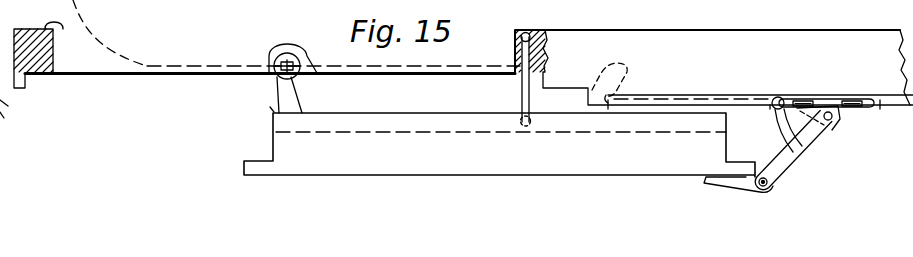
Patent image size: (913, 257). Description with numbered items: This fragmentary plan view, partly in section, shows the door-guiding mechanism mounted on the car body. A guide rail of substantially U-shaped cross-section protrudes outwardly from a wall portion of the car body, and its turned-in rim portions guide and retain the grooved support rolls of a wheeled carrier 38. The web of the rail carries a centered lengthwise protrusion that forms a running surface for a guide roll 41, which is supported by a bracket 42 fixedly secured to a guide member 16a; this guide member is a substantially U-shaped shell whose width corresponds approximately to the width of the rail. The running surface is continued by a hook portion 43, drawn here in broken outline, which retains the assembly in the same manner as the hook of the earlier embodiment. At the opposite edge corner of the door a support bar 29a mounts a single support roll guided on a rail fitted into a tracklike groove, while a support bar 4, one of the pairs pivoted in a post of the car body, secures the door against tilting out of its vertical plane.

The support bar 4 is at (522, 100).
The hook portion 43 is at (609, 70).
The support bar 29a is at (291, 98).
The guide roll 41 is at (784, 100).
The bracket 42 is at (777, 128).
The guide member 16a is at (808, 150).
The wheeled carrier 38 is at (852, 115).